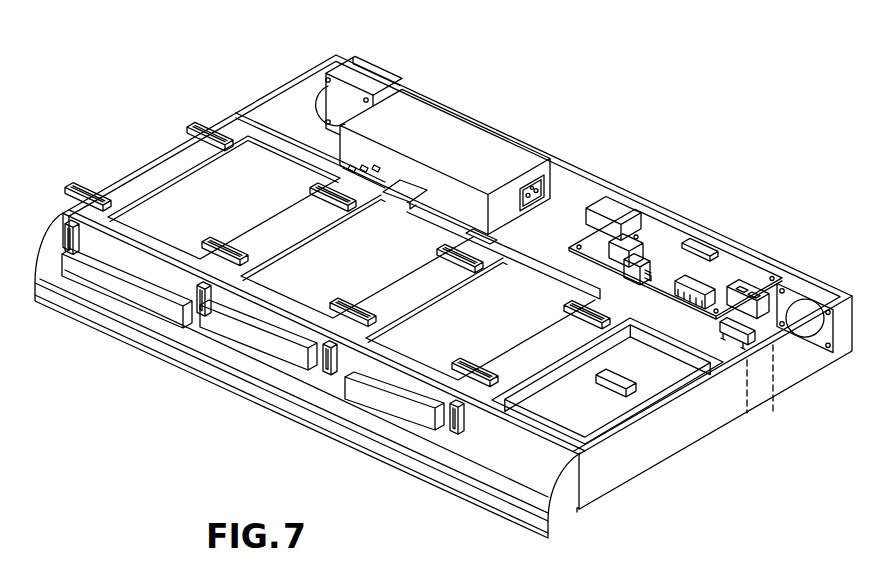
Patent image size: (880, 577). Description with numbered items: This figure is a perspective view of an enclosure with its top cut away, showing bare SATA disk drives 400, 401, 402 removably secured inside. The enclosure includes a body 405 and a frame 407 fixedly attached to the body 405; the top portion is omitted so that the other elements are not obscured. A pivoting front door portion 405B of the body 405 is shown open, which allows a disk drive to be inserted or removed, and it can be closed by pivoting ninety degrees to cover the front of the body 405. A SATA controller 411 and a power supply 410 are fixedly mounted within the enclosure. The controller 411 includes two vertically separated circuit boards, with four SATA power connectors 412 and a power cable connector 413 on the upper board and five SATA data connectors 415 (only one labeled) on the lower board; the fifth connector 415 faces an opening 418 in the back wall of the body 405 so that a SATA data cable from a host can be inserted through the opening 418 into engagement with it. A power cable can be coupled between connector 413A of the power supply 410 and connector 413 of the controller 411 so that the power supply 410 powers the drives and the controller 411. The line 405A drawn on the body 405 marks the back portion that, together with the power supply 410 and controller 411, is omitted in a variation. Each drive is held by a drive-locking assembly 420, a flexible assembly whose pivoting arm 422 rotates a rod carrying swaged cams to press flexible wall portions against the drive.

The SATA disk drive 400 is at (157, 208).
The SATA disk drive 401 is at (312, 290).
The SATA disk drive 402 is at (428, 353).
The body 405 is at (605, 497).
The line 405A is at (748, 393).
The front door portion 405B is at (175, 325).
The frame 407 is at (240, 127).
The power supply 410 is at (430, 108).
The SATA controller 411 is at (653, 233).
The SATA power connector 412 is at (607, 213).
The power cable connector 413 is at (633, 260).
The connector 413A is at (540, 170).
The SATA data connector 415 is at (762, 322).
The opening 418 is at (697, 240).
The drive-locking assembly 420 is at (553, 372).
The pivoting arm 422 is at (120, 273).